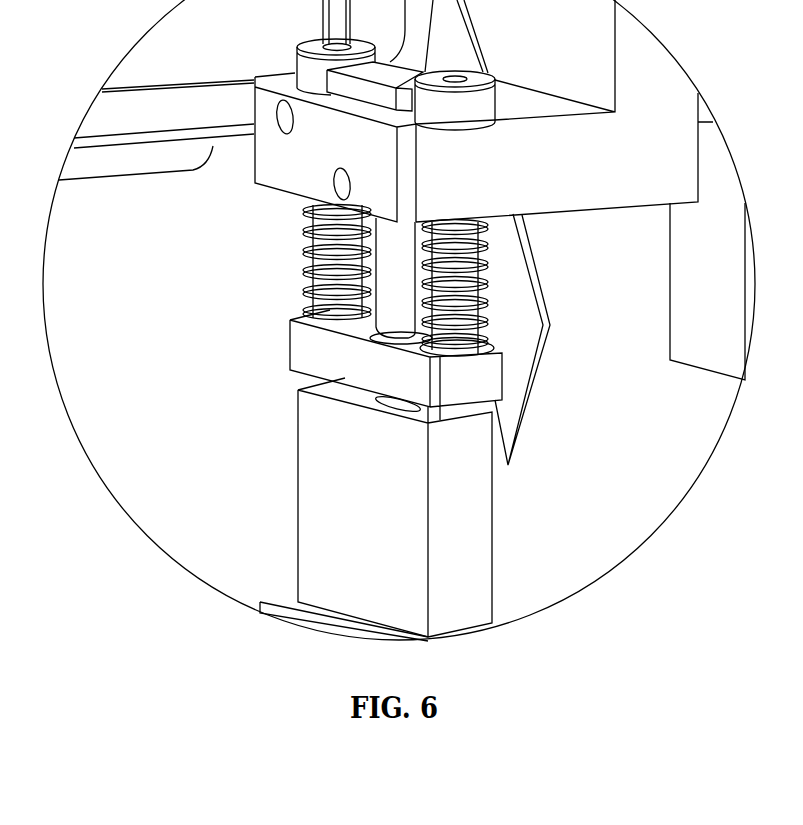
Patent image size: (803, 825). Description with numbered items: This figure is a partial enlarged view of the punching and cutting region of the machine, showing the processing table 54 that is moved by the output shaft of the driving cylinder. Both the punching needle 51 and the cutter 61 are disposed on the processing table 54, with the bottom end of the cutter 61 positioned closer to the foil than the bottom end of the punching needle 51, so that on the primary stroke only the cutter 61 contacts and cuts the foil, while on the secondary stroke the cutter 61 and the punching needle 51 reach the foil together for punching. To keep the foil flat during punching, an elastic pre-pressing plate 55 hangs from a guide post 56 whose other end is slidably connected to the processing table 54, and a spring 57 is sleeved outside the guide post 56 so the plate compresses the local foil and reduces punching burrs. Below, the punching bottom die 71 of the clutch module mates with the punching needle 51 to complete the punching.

The punching needle 51 is at (403, 302).
The processing table 54 is at (560, 183).
The elastic pre-pressing plate 55 is at (313, 360).
The guide post 56 is at (335, 230).
The spring 57 is at (308, 273).
The cutter 61 is at (520, 353).
The punching bottom die 71 is at (337, 495).